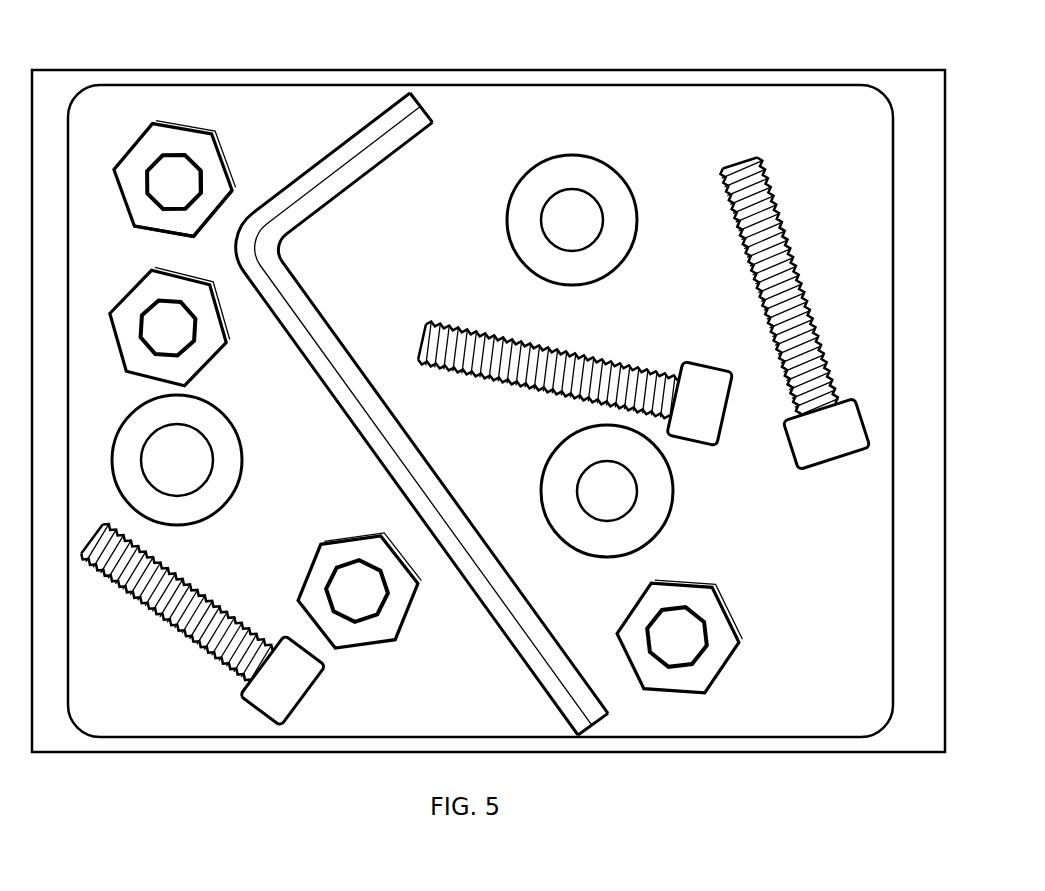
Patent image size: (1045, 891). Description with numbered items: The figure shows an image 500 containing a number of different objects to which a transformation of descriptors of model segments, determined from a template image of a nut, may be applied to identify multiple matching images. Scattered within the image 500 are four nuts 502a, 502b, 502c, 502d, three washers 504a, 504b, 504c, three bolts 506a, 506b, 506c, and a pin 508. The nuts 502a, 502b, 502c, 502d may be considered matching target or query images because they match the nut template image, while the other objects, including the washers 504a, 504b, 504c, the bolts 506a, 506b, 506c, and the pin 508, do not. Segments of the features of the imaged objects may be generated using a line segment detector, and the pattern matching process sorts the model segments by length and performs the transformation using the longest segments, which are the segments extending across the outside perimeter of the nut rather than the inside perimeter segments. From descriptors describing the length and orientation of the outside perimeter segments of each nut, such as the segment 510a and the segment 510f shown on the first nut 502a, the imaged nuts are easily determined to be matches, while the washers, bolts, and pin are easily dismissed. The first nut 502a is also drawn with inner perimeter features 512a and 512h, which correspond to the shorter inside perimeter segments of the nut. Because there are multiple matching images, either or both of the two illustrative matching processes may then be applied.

The image 500 is at (512, 43).
The nut 502a is at (136, 108).
The nut 502b is at (208, 367).
The nut 502c is at (366, 645).
The nut 502d is at (727, 660).
The washer 504a is at (242, 462).
The washer 504b is at (672, 508).
The washer 504c is at (594, 159).
The bolt 506a is at (159, 617).
The bolt 506b is at (514, 386).
The bolt 506c is at (781, 215).
The pin 508 is at (336, 336).
The segment 510a is at (214, 214).
The segment 510f is at (165, 233).
The first inner protrusion of hex nut 512a is at (205, 184).
The eighth inner protrusion of hex nut 512h is at (176, 172).